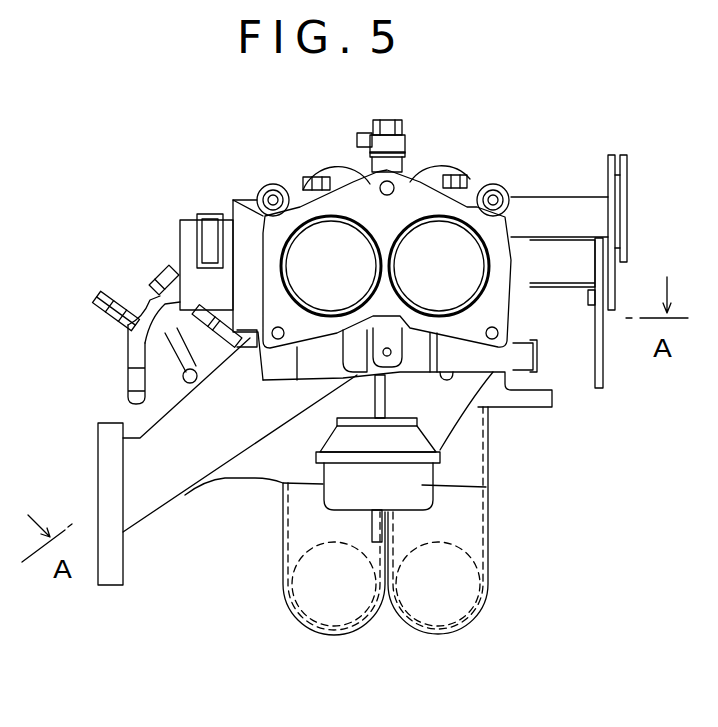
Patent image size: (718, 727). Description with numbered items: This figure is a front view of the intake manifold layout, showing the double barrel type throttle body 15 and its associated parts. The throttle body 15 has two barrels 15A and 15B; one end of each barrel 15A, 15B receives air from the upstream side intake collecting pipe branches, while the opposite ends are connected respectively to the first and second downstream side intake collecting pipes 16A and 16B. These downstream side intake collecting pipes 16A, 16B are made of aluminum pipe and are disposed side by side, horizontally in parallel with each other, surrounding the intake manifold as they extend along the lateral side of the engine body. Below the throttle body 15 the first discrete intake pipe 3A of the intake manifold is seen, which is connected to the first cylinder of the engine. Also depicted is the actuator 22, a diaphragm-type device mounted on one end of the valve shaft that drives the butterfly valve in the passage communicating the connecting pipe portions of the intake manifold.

The double barrel type throttle body 15 is at (247, 203).
The barrel 15A is at (347, 283).
The barrel 15B is at (455, 283).
The first discrete intake pipe 3A is at (153, 517).
The first downstream side intake collecting pipe 16A is at (333, 636).
The second downstream side intake collecting pipe 16B is at (440, 636).
The actuator 22 is at (425, 486).